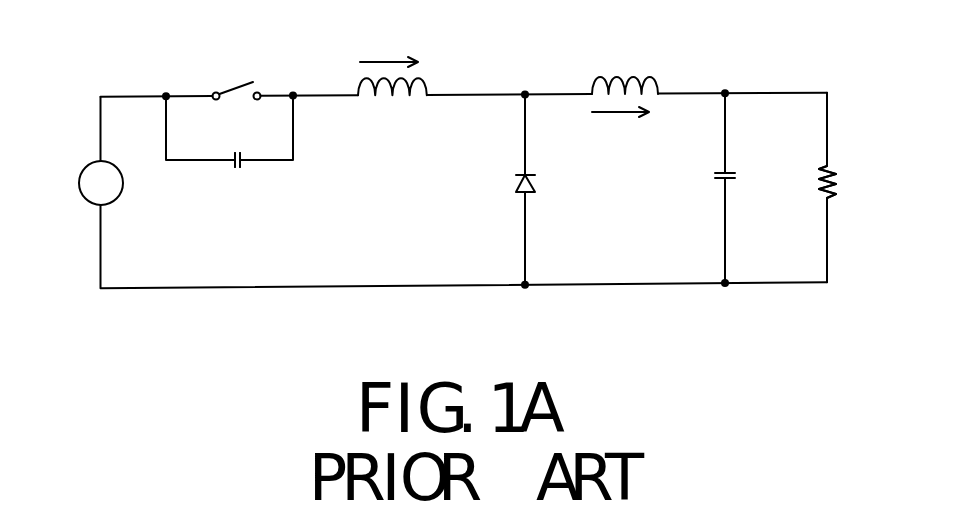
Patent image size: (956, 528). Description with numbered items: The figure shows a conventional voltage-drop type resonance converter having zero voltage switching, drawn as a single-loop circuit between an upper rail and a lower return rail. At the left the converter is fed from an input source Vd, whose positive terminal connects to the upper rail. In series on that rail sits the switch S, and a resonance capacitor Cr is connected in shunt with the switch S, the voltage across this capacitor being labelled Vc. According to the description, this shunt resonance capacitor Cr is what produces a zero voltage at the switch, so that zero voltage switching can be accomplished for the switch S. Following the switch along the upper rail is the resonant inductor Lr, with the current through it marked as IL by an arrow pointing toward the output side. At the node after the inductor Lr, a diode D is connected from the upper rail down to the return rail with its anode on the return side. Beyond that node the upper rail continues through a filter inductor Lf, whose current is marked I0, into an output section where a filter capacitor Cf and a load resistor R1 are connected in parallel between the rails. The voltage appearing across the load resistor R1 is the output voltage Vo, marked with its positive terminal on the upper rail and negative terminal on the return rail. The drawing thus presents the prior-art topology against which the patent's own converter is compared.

The input DC voltage source Vd is at (78, 180).
The switch S is at (237, 79).
The resonance capacitor Cr is at (229, 131).
The resonant capacitor voltage Vc is at (235, 178).
The resonant inductor Lr is at (392, 109).
The resonant inductor current IL is at (389, 47).
The freewheeling diode D is at (511, 189).
The filter inductor Lf is at (625, 68).
The output current I0 is at (620, 132).
The filter capacitor Cf is at (707, 188).
The load resistor R1 is at (808, 188).
The output voltage Vo is at (850, 155).